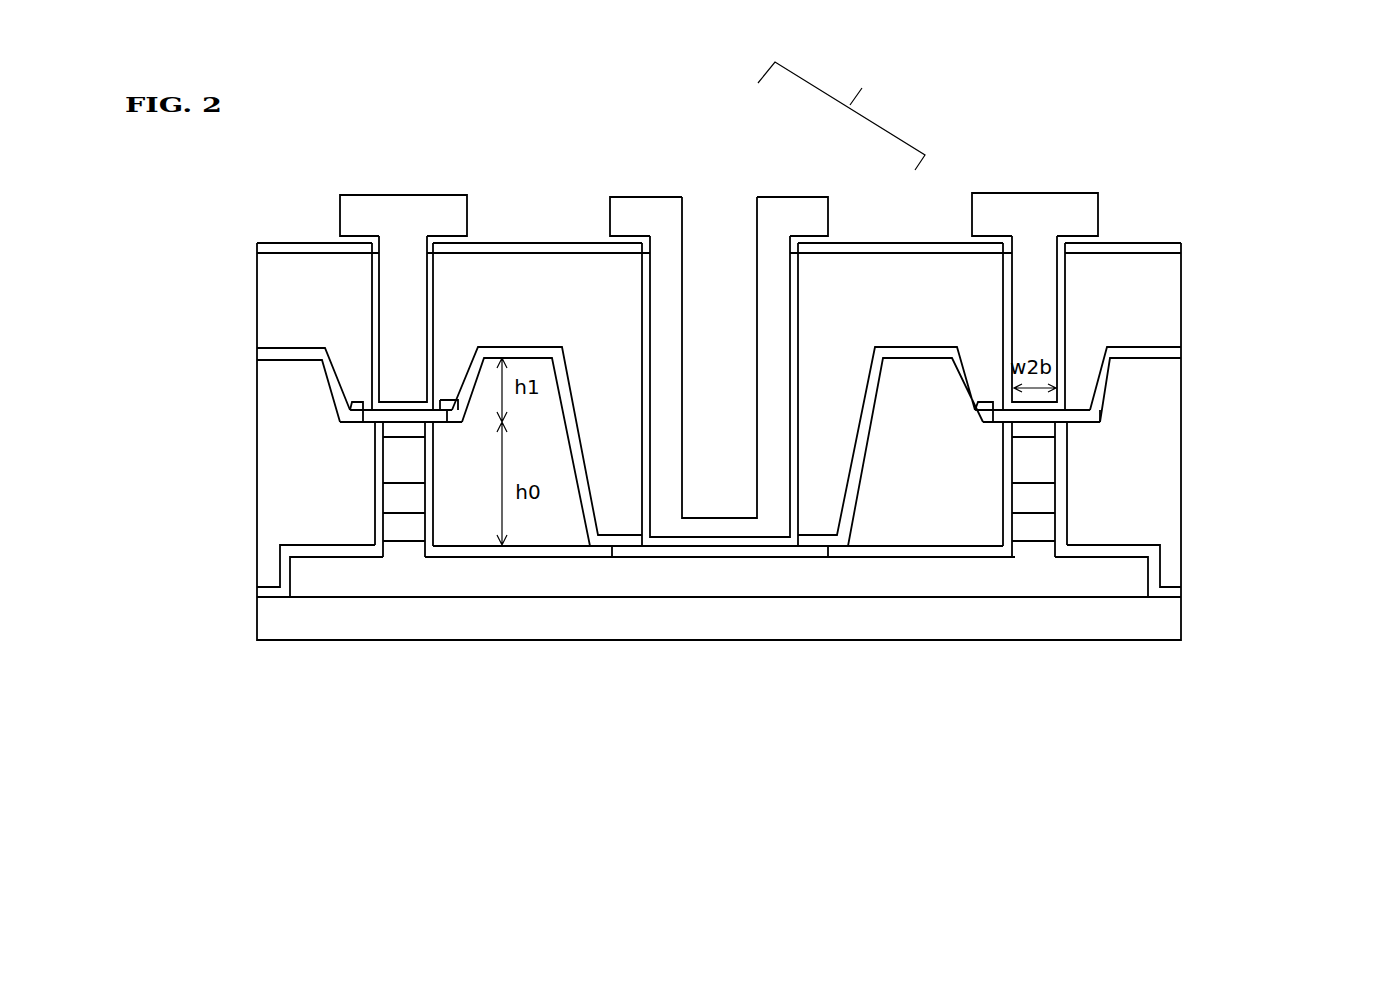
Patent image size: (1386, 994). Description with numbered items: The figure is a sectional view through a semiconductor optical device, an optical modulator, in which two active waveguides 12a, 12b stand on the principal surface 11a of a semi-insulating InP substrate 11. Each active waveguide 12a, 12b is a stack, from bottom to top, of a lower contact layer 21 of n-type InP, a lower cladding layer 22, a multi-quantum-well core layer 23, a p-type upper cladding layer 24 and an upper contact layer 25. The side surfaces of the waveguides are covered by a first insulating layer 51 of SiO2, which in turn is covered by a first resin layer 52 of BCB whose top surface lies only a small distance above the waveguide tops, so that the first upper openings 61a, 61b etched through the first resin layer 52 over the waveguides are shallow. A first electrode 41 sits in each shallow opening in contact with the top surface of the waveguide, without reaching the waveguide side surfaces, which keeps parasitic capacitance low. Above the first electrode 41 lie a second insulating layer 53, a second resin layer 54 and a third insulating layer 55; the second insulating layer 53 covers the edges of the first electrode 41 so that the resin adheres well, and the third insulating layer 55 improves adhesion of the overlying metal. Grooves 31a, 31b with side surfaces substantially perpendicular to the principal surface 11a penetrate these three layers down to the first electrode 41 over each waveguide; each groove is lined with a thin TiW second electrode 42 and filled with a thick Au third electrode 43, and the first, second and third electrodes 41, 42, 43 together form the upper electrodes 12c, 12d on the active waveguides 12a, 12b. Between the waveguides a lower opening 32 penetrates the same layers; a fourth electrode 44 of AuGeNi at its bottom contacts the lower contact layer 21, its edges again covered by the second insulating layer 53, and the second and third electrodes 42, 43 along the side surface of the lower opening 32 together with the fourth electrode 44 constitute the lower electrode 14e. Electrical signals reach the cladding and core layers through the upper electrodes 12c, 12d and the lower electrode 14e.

The substrate 11 is at (1122, 614).
The principal surface of the substrate 11a is at (1003, 597).
The active waveguide 12a is at (202, 428).
The active waveguide 12b is at (1262, 418).
The upper electrode 12c is at (530, 138).
The upper electrode 12d is at (1245, 195).
The lower electrode 14e is at (841, 115).
The lower contact layer 21 is at (1203, 570).
The lower cladding layer 22 is at (1203, 532).
The core layer 23 is at (1203, 497).
The upper cladding layer 24 is at (1203, 462).
The upper contact layer 25 is at (1203, 428).
The groove 31a is at (372, 305).
The groove 31b is at (1003, 290).
The lower opening 32 is at (645, 290).
The first electrode 41 is at (1115, 358).
The second electrode 42 is at (1068, 298).
The third electrode 43 is at (1078, 218).
The fourth electrode 44 is at (705, 540).
The first insulating layer 51 is at (373, 428).
The first resin layer 52 is at (278, 384).
The second insulating layer 53 is at (272, 345).
The second resin layer 54 is at (271, 299).
The third insulating layer 55 is at (258, 245).
The first upper opening 61a is at (350, 408).
The first upper opening 61b is at (980, 412).